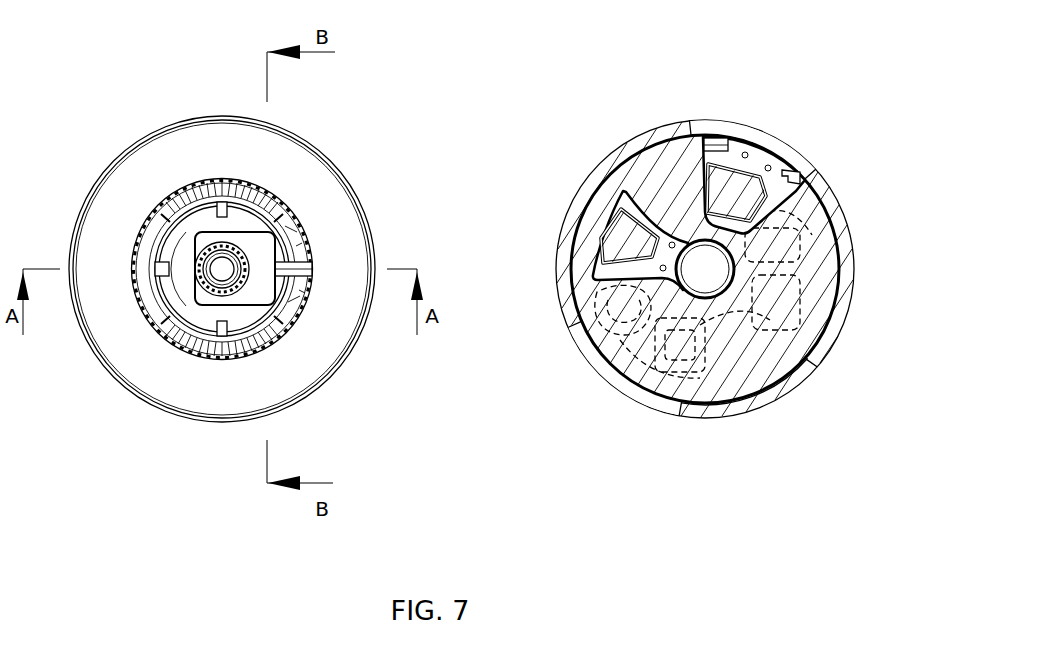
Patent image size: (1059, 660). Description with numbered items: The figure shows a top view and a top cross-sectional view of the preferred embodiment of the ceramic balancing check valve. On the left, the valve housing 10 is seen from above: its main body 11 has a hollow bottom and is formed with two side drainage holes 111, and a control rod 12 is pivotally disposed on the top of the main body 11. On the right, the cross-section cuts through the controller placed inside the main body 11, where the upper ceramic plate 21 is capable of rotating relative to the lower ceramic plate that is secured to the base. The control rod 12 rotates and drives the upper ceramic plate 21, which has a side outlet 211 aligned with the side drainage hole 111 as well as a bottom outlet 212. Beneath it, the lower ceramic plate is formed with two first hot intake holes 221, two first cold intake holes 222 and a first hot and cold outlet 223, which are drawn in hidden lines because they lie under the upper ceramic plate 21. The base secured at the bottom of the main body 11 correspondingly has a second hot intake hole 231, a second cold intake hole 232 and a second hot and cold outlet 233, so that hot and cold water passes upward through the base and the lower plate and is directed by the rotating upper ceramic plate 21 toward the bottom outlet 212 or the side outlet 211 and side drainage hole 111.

The valve housing 10 is at (382, 178).
The main body 11 is at (148, 172).
The control rod 12 is at (263, 270).
The upper ceramic plate 21 is at (750, 392).
The side drainage hole 111 is at (842, 290).
The side outlet 211 is at (758, 160).
The bottom outlet 212 is at (707, 270).
The first hot intake hole 221 is at (850, 335).
The first cold intake hole 222 is at (842, 248).
The first hot and cold outlet 223 is at (640, 270).
The second hot intake hole 231 is at (732, 417).
The second cold intake hole 232 is at (692, 125).
The second hot and cold outlet 233 is at (736, 192).